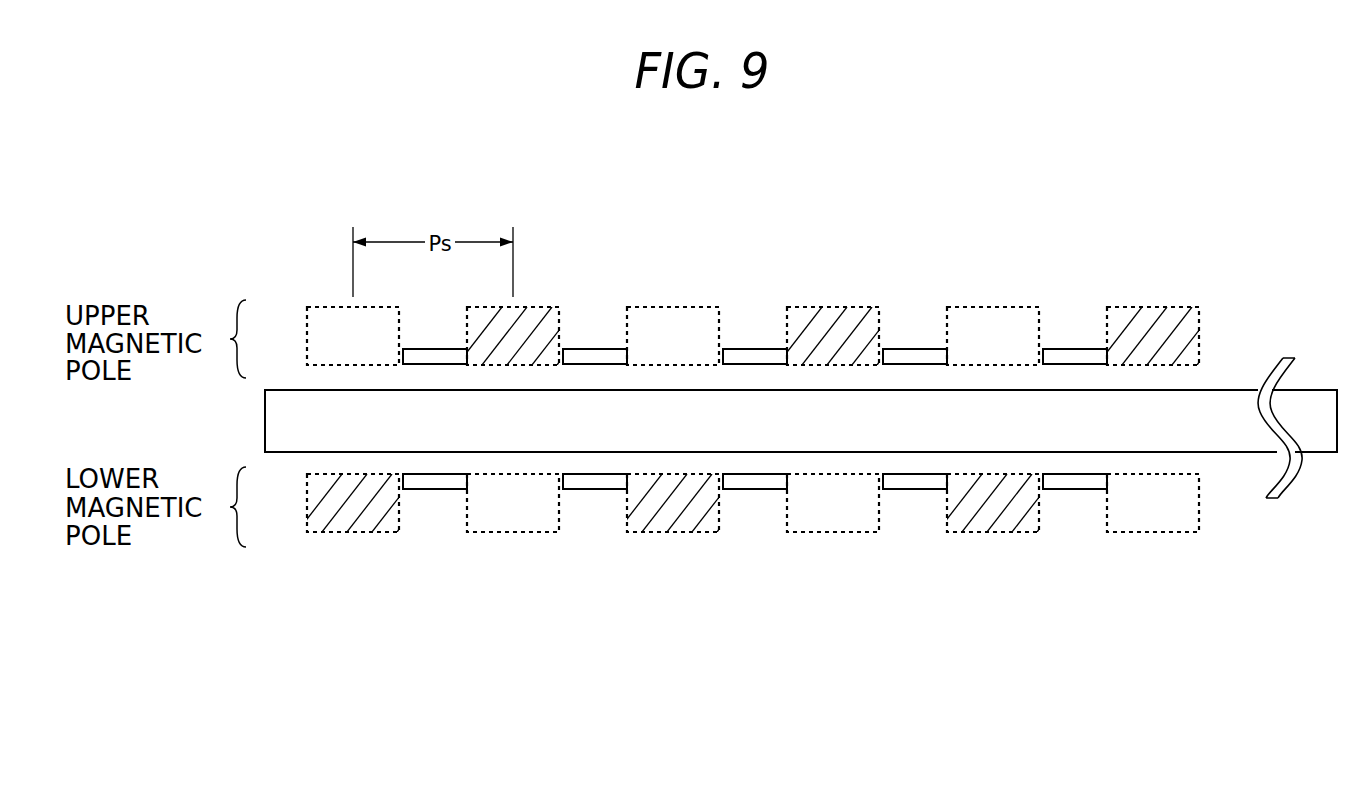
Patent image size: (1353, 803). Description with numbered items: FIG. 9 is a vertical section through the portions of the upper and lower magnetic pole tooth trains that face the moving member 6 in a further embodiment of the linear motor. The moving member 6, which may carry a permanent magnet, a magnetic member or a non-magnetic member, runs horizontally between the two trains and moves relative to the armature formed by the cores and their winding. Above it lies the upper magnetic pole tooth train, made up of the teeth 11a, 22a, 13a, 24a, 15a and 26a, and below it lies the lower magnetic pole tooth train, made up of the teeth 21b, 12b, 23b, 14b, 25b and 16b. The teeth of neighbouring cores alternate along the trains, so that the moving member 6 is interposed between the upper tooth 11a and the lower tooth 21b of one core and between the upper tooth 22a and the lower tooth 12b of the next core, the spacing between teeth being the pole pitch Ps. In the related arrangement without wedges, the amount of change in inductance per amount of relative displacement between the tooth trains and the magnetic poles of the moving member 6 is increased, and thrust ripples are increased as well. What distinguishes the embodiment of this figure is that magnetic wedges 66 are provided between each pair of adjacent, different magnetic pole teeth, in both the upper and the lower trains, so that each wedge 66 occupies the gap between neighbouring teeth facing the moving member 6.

The moving member 6 is at (1217, 388).
The magnetic wedge 66 is at (752, 349).
The upper magnetic pole tooth 11a is at (322, 307).
The upper magnetic pole tooth 22a is at (547, 307).
The upper magnetic pole tooth 13a is at (677, 307).
The upper magnetic pole tooth 24a is at (828, 307).
The upper magnetic pole 15a is at (992, 307).
The upper magnetic pole 26a is at (1147, 307).
The lower magnetic pole tooth 21b is at (360, 532).
The lower magnetic pole tooth 12b is at (515, 533).
The lower magnetic pole tooth 23b is at (680, 532).
The lower magnetic pole tooth 14b is at (832, 532).
The lower magnetic pole 25b is at (1000, 532).
The lower magnetic pole 16b is at (1158, 533).